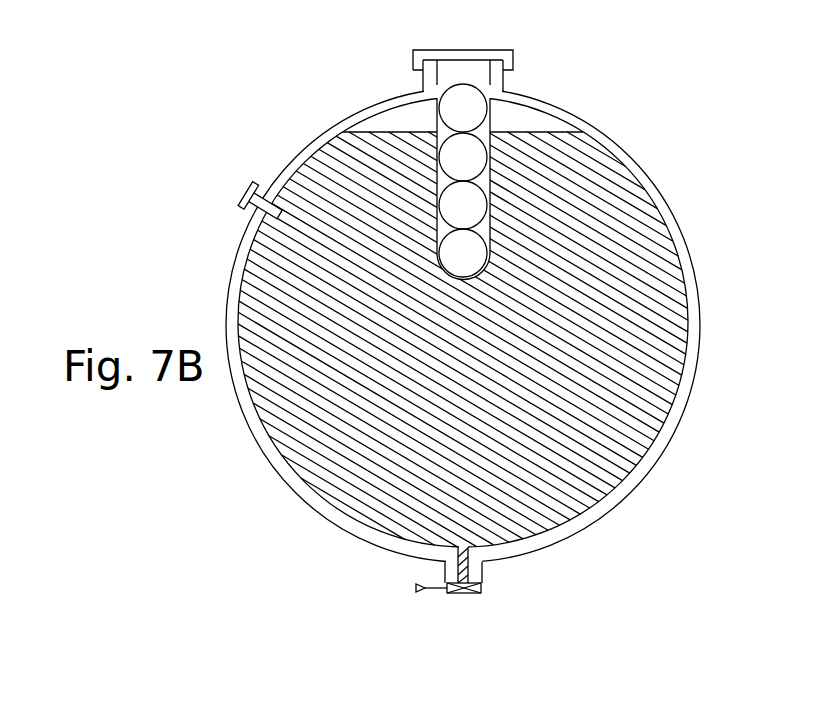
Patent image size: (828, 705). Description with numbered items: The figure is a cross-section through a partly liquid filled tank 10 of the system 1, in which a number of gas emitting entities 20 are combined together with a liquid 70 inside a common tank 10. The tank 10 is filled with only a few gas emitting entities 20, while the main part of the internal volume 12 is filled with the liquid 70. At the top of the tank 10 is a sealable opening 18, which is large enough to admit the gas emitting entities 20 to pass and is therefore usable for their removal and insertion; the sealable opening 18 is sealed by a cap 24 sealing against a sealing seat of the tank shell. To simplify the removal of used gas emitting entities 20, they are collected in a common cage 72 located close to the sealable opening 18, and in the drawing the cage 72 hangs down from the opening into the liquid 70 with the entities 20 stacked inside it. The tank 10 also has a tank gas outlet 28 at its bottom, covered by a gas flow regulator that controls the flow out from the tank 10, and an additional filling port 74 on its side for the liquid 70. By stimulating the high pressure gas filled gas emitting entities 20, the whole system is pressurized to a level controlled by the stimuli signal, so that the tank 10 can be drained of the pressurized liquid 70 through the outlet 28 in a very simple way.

The apparatus 1 is at (155, 201).
The tank 10 is at (360, 116).
The internal volume 12 is at (675, 326).
The sealable opening 18 is at (465, 72).
The gas emitting entities 20 is at (475, 203).
The cap 24 is at (415, 57).
The tank gas outlet 28 is at (460, 568).
The liquid 70 is at (364, 510).
The common cage 72 is at (463, 108).
The filling port 74 is at (238, 191).